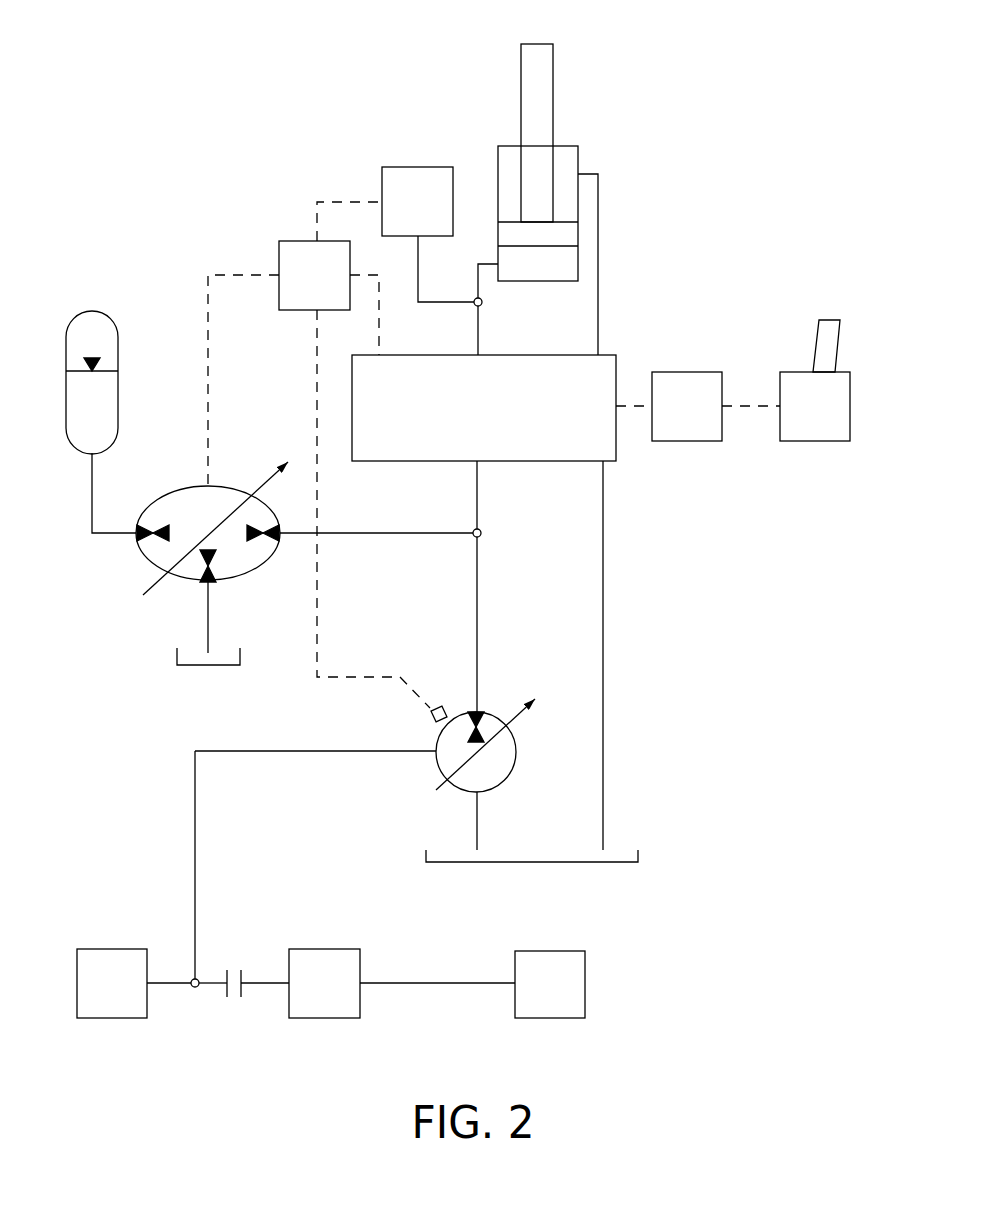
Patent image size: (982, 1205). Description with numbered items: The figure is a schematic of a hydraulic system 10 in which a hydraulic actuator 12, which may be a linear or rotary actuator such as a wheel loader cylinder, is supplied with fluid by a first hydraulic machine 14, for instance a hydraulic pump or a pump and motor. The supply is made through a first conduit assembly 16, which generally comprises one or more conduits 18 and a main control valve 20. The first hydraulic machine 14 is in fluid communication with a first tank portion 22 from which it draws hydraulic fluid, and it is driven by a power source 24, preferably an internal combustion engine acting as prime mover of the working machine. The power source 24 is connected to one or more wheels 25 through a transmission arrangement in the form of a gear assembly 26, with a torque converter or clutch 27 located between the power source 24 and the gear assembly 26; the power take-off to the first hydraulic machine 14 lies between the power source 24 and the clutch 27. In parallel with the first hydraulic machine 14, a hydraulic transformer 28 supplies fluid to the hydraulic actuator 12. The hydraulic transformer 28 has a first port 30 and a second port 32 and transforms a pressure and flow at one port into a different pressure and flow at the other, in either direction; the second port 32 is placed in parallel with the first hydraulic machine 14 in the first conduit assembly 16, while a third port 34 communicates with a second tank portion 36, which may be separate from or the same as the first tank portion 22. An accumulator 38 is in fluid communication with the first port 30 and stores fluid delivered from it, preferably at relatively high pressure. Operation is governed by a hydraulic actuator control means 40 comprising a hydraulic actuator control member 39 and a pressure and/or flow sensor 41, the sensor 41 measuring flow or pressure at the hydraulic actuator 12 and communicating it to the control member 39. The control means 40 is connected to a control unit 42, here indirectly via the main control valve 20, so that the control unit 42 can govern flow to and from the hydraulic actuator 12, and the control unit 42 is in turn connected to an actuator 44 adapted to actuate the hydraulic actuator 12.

The hydraulic system 10 is at (713, 198).
The hydraulic actuator 12 is at (478, 138).
The first hydraulic machine 14 is at (507, 780).
The first conduit assembly 16 is at (443, 565).
The conduits 18 is at (484, 350).
The main control valve 20 is at (474, 420).
The first tank portion 22 is at (508, 874).
The power source 24 is at (99, 995).
The wheels 25 is at (537, 995).
The gear assembly 26 is at (312, 995).
The clutch 27 is at (240, 958).
The hydraulic transformer 28 is at (192, 483).
The first port 30 is at (126, 542).
The second port 32 is at (292, 522).
The third port 34 is at (215, 588).
The second tank portion 36 is at (192, 673).
The accumulator 38 is at (105, 305).
The hydraulic actuator control member 39 is at (302, 287).
The hydraulic actuator control means 40 is at (233, 110).
The pressure and/or flow sensor 41 is at (405, 213).
The control unit 42 is at (674, 418).
The actuator 44 is at (802, 418).